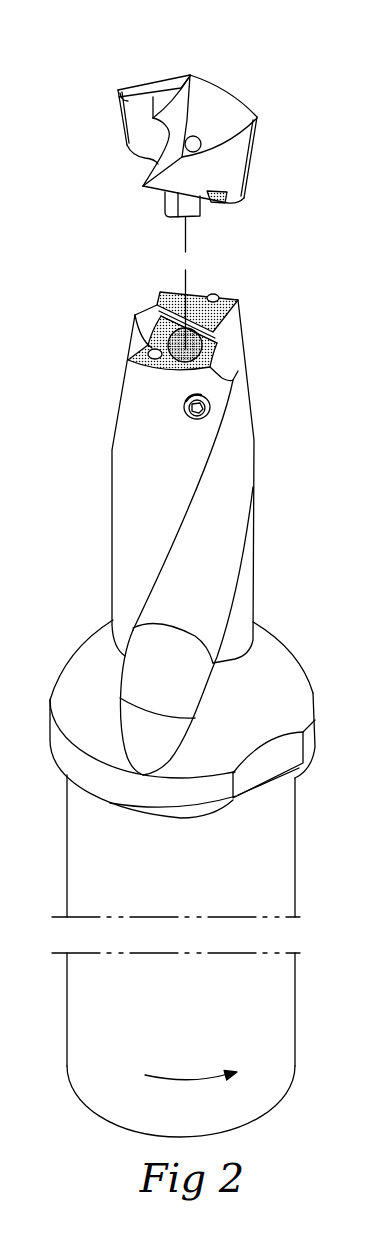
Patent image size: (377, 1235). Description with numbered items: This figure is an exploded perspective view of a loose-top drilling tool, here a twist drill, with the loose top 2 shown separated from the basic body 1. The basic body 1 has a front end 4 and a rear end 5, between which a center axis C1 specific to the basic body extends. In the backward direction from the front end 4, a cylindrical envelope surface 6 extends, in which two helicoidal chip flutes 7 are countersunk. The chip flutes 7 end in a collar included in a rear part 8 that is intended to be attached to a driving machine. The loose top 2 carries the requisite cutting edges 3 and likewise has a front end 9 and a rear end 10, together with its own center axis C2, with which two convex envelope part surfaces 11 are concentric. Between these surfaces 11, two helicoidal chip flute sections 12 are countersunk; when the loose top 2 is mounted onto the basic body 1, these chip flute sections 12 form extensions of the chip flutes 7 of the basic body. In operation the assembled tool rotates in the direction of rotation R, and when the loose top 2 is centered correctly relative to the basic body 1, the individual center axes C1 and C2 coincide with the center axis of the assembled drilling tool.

The basic body 1 is at (168, 709).
The loose top 2 is at (207, 142).
The cutting edges 3 is at (245, 108).
The front end 4 is at (143, 305).
The rear end 5 is at (83, 1115).
The cylindrical envelope surface 6 is at (156, 513).
The chip flutes 7 is at (232, 488).
The rear part 8 is at (80, 818).
The front end 9 is at (167, 70).
The rear end 10 is at (220, 208).
The convex envelope part surfaces 11 is at (227, 180).
The chip flute sections 12 is at (137, 164).
The center axis C1 is at (188, 278).
The center axis C2 is at (183, 225).
The direction of rotation R is at (191, 1066).